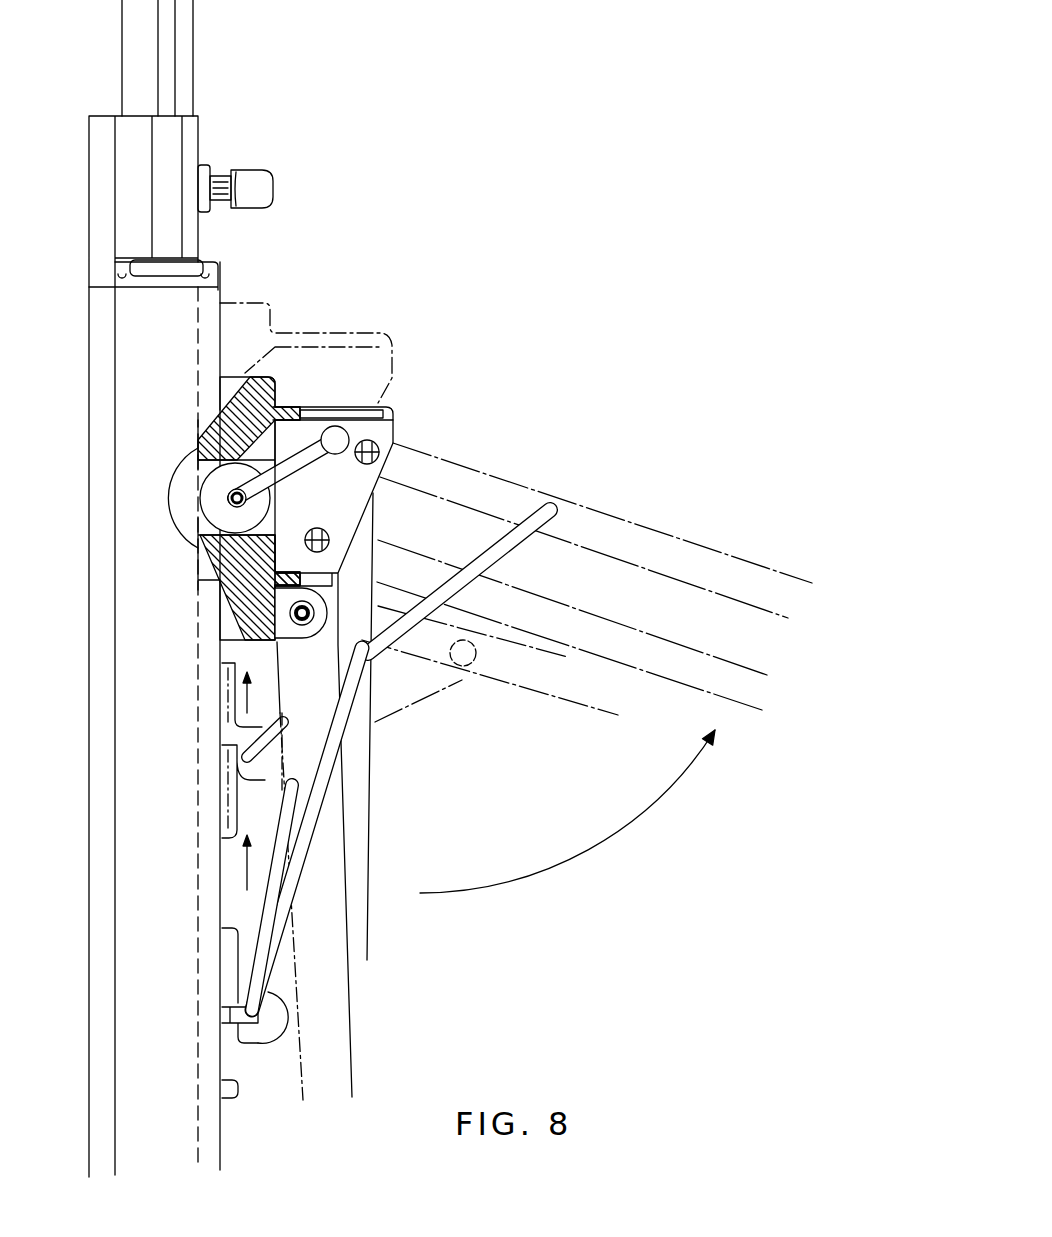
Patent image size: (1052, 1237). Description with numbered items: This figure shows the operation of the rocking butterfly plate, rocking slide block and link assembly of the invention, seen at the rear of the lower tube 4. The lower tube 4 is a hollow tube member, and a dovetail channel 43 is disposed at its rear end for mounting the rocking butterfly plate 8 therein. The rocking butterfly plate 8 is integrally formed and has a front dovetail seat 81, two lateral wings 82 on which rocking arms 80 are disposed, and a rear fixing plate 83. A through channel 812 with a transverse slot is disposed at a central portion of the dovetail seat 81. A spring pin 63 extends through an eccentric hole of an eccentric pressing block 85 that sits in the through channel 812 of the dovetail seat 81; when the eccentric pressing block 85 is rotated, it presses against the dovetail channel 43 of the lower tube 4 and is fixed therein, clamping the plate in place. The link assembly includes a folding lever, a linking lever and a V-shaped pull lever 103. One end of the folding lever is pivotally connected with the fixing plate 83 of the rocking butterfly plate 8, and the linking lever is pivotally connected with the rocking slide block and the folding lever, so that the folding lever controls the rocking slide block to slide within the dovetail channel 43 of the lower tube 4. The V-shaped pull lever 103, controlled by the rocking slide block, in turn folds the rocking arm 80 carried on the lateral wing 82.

The lower tube 4 is at (89, 893).
The rocking butterfly plate 8 is at (343, 380).
The dovetail channel 43 is at (222, 1130).
The spring pin 63 is at (270, 492).
The rocking arm 80 is at (618, 527).
The dovetail seat 81 is at (198, 586).
The through channel 812 is at (200, 538).
The lateral wing 82 is at (392, 424).
The fixing plate 83 is at (302, 639).
The eccentric pressing block 85 is at (212, 481).
The V-shaped pull lever 103 is at (345, 746).